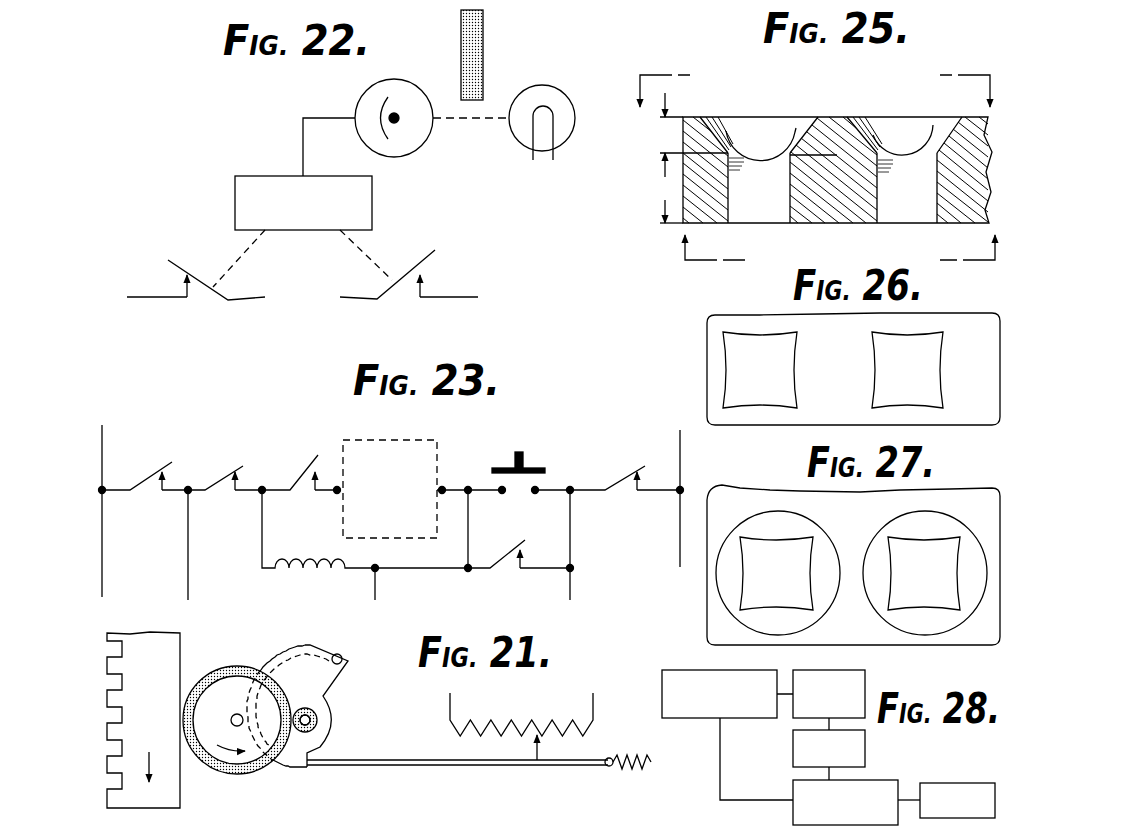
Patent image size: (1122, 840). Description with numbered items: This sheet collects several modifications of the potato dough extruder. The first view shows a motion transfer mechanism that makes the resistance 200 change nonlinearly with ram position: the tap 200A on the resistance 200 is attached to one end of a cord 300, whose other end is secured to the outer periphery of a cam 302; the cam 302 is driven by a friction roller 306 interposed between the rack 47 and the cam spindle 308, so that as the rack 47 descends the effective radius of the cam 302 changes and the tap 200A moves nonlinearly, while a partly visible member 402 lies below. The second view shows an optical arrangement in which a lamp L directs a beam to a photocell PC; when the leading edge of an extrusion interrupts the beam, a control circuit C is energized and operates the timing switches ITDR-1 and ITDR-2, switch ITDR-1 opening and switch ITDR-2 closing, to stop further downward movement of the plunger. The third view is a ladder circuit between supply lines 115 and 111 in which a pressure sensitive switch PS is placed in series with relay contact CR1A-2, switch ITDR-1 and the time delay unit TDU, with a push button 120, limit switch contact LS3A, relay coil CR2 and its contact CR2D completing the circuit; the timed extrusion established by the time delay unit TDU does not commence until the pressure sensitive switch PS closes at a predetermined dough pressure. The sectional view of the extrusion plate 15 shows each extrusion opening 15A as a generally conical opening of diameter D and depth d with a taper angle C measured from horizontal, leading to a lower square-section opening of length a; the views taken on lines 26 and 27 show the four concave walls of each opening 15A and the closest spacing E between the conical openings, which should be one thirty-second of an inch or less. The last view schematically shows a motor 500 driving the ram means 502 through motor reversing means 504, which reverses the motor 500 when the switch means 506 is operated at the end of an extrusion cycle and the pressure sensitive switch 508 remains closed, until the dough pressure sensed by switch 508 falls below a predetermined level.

In FIG. 25, the extrusion plate 15 is at (838, 116).
In FIG. 26, the extrusion plate 15 is at (706, 360).
In FIG. 27, the extrusion plate 15 is at (706, 603).
In FIG. 25, the extrusion opening 15A is at (752, 156).
In FIG. 26, the extrusion opening 15A is at (878, 358).
In FIG. 25, the section line 26— 26 is at (838, 271).
In FIG. 25, the section line 27— 27 is at (824, 65).
In FIG. 21, the rack 47 is at (172, 652).
In FIG. 23, the supply line 111 is at (680, 447).
In FIG. 23, the supply line 115 is at (104, 567).
In FIG. 23, the push button switch 120 is at (523, 455).
In FIG. 21, the resistance 200 is at (497, 722).
In FIG. 21, the tap 200A is at (489, 748).
In FIG. 21, the cord 300 is at (385, 766).
In FIG. 21, the cam 302 is at (330, 682).
In FIG. 21, the friction roller 306 is at (224, 772).
In FIG. 21, the cam spindle 308 is at (318, 722).
In FIG. 21, the member 402 is at (403, 833).
In FIG. 28, the motor 500 is at (804, 670).
In FIG. 28, the ram means 502 is at (866, 758).
In FIG. 28, the motor reversing means 504 is at (723, 668).
In FIG. 28, the switch means 506 is at (968, 782).
In FIG. 28, the pressure sensitive switch 508 is at (793, 784).
In FIG. 22, the control circuit / taper angle C is at (249, 175).
In FIG. 25, the control circuit / taper angle C is at (825, 177).
In FIG. 22, the photocell PC is at (430, 132).
In FIG. 22, the light source L is at (541, 86).
In FIG. 22, the timing switch 1TDR1 ITDR-1 is at (196, 293).
In FIG. 23, the timing switch 1TDR1 ITDR-1 is at (224, 533).
In FIG. 22, the timing switch 1TDR2 ITDR-2 is at (409, 288).
In FIG. 23, the relay contact CR1A-2 is at (144, 493).
In FIG. 23, the pressure sensitive switch PS is at (300, 447).
In FIG. 23, the time delay unit TDU is at (390, 489).
In FIG. 23, the limit switch contact LS3A is at (625, 494).
In FIG. 23, the relay coil CR2 is at (367, 545).
In FIG. 23, the relay contact CR2D is at (521, 545).
In FIG. 25, the depth of conical opening d is at (667, 124).
In FIG. 25, the length of lower opening a is at (667, 188).
In FIG. 27, the diameter of conical opening D is at (802, 516).
In FIG. 27, the spacing between conical openings E is at (882, 573).